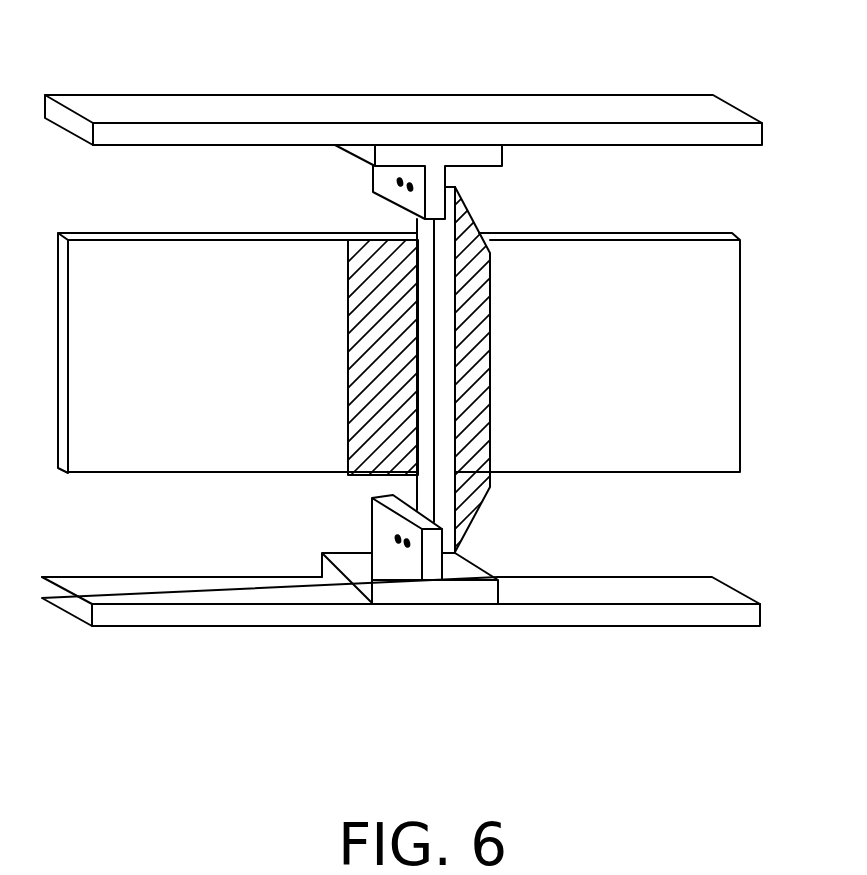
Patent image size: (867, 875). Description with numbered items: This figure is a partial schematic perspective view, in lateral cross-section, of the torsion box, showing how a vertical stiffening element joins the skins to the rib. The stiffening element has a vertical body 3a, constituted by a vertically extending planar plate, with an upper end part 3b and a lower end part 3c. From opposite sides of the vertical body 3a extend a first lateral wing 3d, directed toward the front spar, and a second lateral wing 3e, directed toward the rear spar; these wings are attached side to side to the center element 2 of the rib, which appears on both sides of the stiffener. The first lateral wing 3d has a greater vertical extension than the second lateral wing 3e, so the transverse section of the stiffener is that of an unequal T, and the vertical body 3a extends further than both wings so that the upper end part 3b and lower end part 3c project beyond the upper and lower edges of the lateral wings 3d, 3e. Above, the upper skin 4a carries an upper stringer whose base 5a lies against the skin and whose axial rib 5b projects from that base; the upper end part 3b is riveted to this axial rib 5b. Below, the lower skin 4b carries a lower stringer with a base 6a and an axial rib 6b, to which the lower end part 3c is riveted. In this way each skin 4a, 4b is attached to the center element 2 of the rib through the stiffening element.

The center element of the rib 2 is at (206, 393).
The vertical body 3a is at (442, 363).
The upper end part 3b is at (458, 190).
The lower end part 3c is at (447, 540).
The first lateral wing 3d is at (508, 233).
The second lateral wing 3e is at (365, 236).
The upper skin 4a is at (152, 105).
The lower skin 4b is at (145, 588).
The base of the upper stringer 5a is at (466, 153).
The axial rib of the upper stringer 5b is at (385, 181).
The base of the lower stringer 6a is at (483, 592).
The axial rib of the lower stringer 6b is at (382, 521).